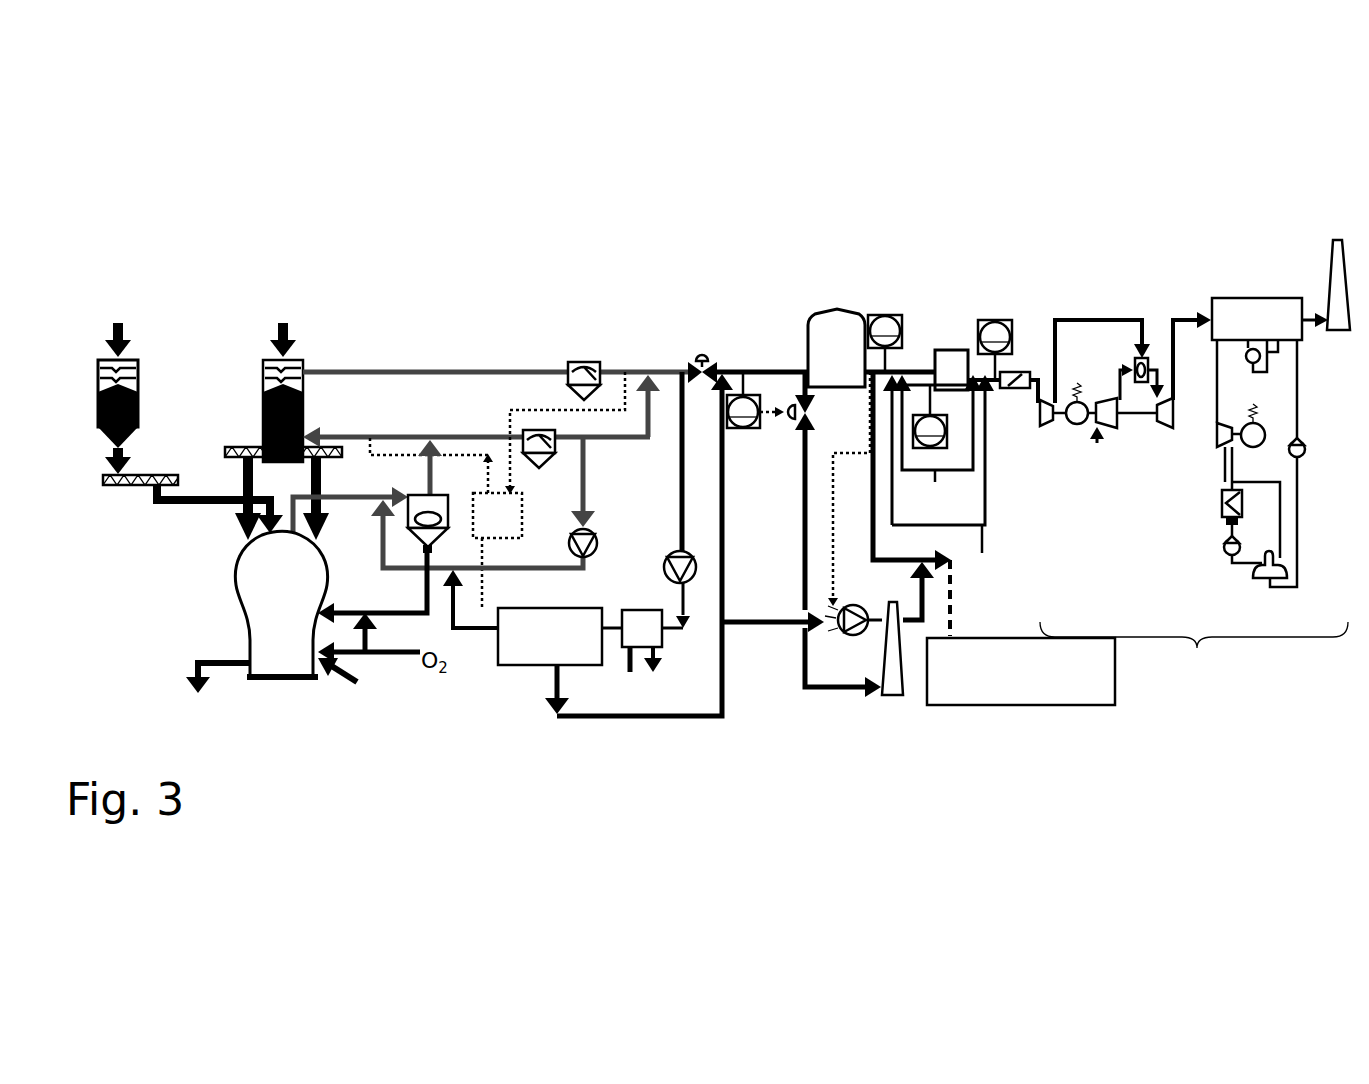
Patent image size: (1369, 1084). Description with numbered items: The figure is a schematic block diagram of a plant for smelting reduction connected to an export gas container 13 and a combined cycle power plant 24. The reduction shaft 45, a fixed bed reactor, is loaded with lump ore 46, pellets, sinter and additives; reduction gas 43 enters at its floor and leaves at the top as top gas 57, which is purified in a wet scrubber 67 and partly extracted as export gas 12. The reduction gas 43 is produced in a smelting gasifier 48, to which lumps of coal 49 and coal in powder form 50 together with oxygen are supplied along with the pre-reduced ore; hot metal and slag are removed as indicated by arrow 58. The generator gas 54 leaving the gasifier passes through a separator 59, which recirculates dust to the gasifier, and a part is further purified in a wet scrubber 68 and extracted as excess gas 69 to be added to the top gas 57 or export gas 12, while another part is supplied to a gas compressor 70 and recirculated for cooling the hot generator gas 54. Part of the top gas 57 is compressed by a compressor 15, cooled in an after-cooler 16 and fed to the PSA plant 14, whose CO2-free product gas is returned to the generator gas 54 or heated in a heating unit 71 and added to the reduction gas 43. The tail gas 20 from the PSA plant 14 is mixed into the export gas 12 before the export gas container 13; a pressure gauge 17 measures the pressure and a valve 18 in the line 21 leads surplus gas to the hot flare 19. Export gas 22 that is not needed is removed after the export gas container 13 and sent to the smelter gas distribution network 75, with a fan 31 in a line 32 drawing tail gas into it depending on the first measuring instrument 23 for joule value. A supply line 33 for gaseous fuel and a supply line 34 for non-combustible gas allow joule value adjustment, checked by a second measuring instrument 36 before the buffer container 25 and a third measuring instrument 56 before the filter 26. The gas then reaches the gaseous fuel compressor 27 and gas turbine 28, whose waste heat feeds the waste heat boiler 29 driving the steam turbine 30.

The export gas 12 is at (746, 370).
The export gas container 13 is at (836, 348).
The PSA plant 14 is at (532, 617).
The compressor 15 is at (672, 548).
The after-cooler 16 is at (667, 645).
The pressure gauge 17 is at (743, 428).
The valve 18 is at (815, 405).
The hot flare 19 is at (896, 690).
The tail gas 20 is at (655, 718).
The line for export gas to the hot flare 21 is at (848, 692).
The export gas that is not needed 22 is at (870, 481).
The first measuring instrument for measuring joule value 23 is at (884, 310).
The combined cycle power plant 24 is at (1194, 650).
The buffer container 25 is at (948, 348).
The filter 26 is at (1024, 370).
The gaseous fuel compressor 27 is at (1048, 427).
The gas turbine 28 is at (1100, 396).
The waste heat boiler 29 is at (1261, 320).
The steam turbine 30 is at (1233, 428).
The fan 31 is at (848, 636).
The line for tail gas 32 is at (792, 627).
The supply line for gaseous fuel 33 is at (938, 450).
The supply line for non-combustible gas 34 is at (985, 545).
The second measuring instrument for measuring joule value 36 is at (950, 432).
The reduction gas 43 is at (407, 437).
The reduction shaft 45 is at (260, 403).
The lump ore 46 is at (284, 325).
The smelting gasifier 48 is at (270, 593).
The lumps of coal 49 is at (180, 510).
The coal in powder form 50 is at (353, 684).
The generator gas 54 is at (363, 495).
The third measuring instrument for measuring joule value 56 is at (994, 318).
The top gas 57 is at (320, 371).
The hot metal and slag removal 58 is at (217, 698).
The separator 59 is at (437, 507).
The wet scrubber 67 is at (582, 362).
The wet scrubber 68 is at (530, 455).
The excess gas 69 is at (618, 440).
The gas compressor 70 is at (598, 540).
The heating unit 71 is at (497, 515).
The smelter gas distribution network 75 is at (1046, 706).